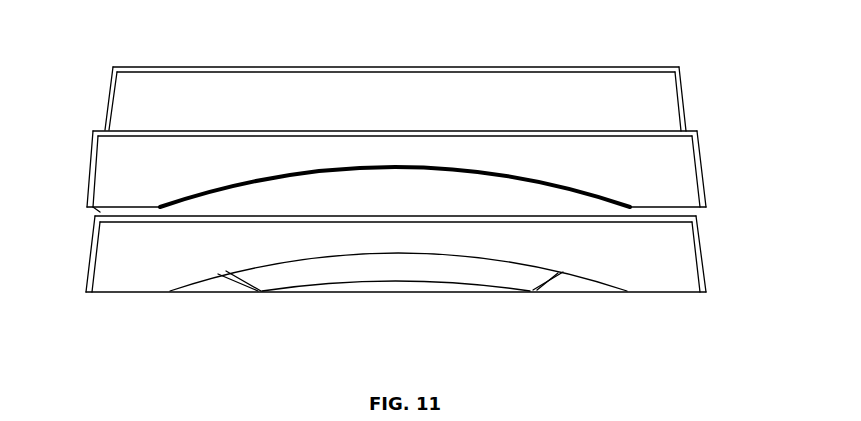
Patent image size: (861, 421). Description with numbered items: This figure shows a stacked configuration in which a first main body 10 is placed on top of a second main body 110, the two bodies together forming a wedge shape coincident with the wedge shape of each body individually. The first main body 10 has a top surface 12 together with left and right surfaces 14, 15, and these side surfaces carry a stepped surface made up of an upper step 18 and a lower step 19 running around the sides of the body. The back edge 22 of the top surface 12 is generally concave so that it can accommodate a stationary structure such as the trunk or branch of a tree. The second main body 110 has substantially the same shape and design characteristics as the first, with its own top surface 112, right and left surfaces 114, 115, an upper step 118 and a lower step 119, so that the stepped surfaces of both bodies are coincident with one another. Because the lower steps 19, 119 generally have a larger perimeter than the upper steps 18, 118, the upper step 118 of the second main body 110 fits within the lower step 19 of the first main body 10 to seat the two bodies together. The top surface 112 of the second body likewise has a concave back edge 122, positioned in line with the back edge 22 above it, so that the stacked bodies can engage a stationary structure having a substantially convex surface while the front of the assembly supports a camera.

The main body 10 is at (90, 90).
The top surface 12 is at (667, 158).
The left surface 14 is at (702, 168).
The right surface 15 is at (97, 162).
The upper step 18 is at (615, 87).
The lower step 19 is at (602, 158).
The back edge 22 is at (363, 170).
The second main body 110 is at (75, 300).
The top surface 112 is at (630, 253).
The right surface 114 is at (702, 260).
The left surface 115 is at (95, 258).
The upper step 118 is at (542, 203).
The lower step 119 is at (675, 267).
The concave back edge 122 is at (503, 281).